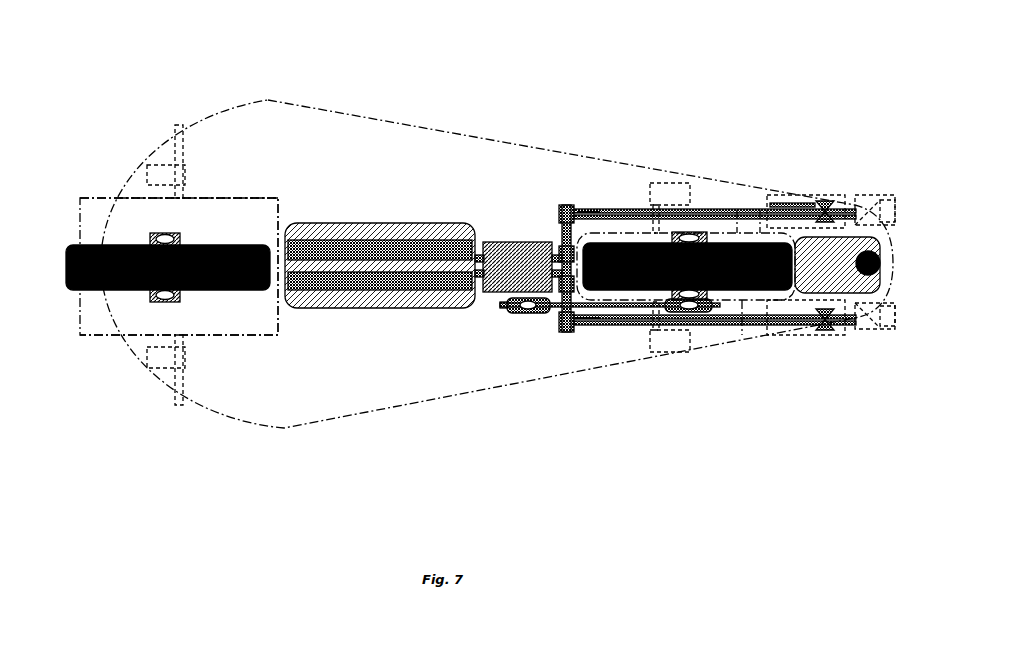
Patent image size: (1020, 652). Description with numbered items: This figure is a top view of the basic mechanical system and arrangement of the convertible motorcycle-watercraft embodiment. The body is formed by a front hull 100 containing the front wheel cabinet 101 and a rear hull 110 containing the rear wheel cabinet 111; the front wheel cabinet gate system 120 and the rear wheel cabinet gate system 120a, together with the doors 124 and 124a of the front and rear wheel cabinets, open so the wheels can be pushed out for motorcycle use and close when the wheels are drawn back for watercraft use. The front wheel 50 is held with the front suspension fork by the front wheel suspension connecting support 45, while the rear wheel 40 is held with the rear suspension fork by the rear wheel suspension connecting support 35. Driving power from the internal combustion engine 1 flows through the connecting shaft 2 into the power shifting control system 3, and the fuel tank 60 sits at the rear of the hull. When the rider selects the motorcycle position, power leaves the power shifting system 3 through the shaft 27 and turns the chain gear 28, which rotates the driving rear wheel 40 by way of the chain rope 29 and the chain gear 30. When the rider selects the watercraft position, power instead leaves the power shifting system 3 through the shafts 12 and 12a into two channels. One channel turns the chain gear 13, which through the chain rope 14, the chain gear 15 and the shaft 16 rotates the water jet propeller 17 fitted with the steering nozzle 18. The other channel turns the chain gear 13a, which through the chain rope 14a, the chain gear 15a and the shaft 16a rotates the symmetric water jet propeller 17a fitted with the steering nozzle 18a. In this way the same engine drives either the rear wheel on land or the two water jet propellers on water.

The internal combustion engine 1 is at (385, 237).
The connecting shaft 2 is at (478, 255).
The power shifting control system 3 is at (518, 242).
The shaft 12 is at (555, 205).
The shaft 12a is at (558, 332).
The chain gear 13 is at (603, 210).
The chain gear 13a is at (600, 326).
The chain rope 14 is at (570, 207).
The chain rope 14a is at (566, 326).
The chain gear 15 is at (567, 208).
The chain gear 15a is at (573, 330).
The shaft 16 is at (755, 210).
The shaft 16a is at (797, 335).
The water jet propeller 17 is at (822, 201).
The water jet propeller 17a is at (825, 330).
The steering nozzle 18 is at (870, 195).
The steering nozzle 18a is at (868, 330).
The shaft 27 is at (534, 308).
The chain gear 28 is at (518, 312).
The chain rope 29 is at (500, 308).
The chain gear 30 is at (703, 315).
The rear wheel suspension connecting support 35 is at (705, 232).
The rear wheel 40 is at (785, 210).
The front wheel suspension connecting support 45 is at (152, 240).
The front wheel 50 is at (205, 230).
The fuel tank 60 is at (858, 240).
The front hull 100 is at (286, 378).
The front wheel cabinet 101 is at (216, 322).
The rear hull 110 is at (742, 335).
The rear wheel cabinet 111 is at (737, 210).
The front wheel cabinet gate system 120 is at (160, 170).
The rear wheel cabinet gate system 120a is at (685, 180).
The door 124 is at (248, 210).
The door 124a is at (760, 210).